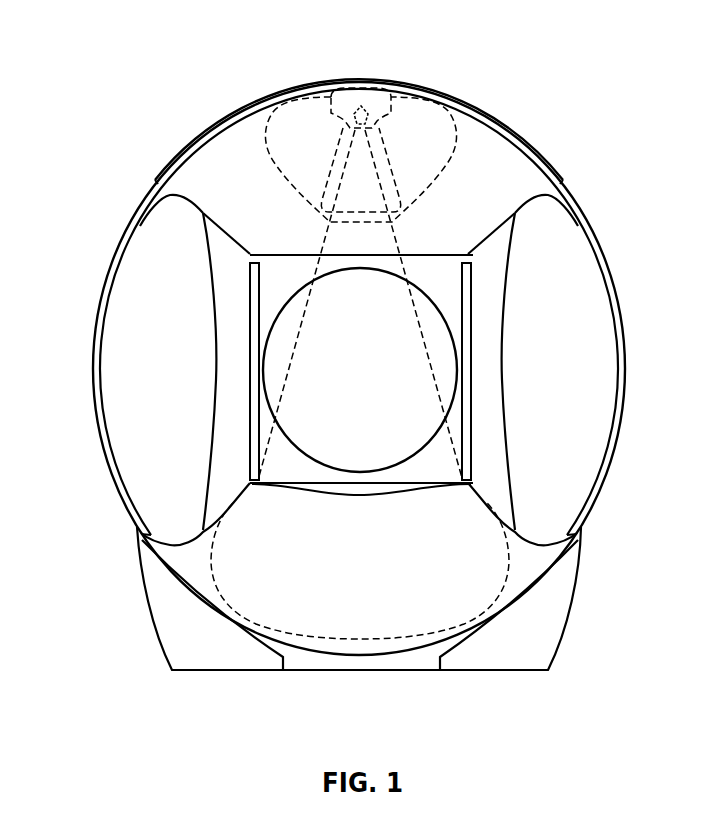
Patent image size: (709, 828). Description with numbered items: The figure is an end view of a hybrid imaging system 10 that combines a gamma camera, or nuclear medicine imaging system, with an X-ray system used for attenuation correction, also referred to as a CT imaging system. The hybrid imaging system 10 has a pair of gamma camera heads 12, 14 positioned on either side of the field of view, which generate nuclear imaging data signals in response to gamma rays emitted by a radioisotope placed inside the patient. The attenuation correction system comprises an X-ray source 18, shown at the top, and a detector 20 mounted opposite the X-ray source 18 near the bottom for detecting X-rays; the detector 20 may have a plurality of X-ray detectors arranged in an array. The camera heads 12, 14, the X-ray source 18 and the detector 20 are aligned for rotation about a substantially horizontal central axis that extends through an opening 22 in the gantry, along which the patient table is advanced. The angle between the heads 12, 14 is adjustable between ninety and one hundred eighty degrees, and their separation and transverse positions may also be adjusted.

The hybrid imaging system 10 is at (606, 228).
The gamma camera head 12 is at (143, 417).
The gamma camera head 14 is at (588, 377).
The X-ray source 18 is at (360, 104).
The detector 20 is at (348, 612).
The opening 22 is at (213, 187).